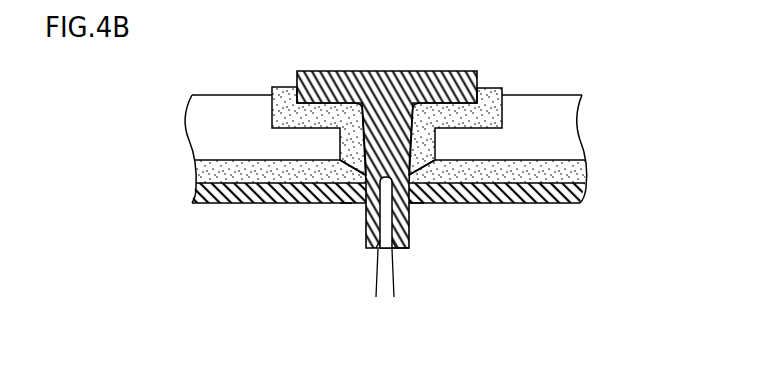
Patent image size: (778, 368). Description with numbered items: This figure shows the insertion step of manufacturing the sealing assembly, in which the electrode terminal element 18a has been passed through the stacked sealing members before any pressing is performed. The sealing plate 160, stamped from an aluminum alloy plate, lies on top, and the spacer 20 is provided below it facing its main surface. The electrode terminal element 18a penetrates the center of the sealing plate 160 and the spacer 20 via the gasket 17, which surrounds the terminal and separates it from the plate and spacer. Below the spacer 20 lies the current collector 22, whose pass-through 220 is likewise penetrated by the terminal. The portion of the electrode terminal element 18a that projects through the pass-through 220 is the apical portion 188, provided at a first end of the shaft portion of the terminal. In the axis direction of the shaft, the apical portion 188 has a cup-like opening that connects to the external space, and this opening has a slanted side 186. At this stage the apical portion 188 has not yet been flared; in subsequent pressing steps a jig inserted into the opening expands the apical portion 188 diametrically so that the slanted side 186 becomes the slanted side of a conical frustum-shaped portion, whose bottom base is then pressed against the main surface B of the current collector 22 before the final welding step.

The electrode terminal element 18a is at (416, 70).
The gasket 17 is at (490, 88).
The sealing plate 160 is at (558, 102).
The spacer 20 is at (583, 170).
The current collector 22 is at (582, 193).
The pass-through 220 is at (413, 203).
The main surface B is at (345, 203).
The apical portion 188 is at (407, 249).
The slanted side 186 is at (386, 288).